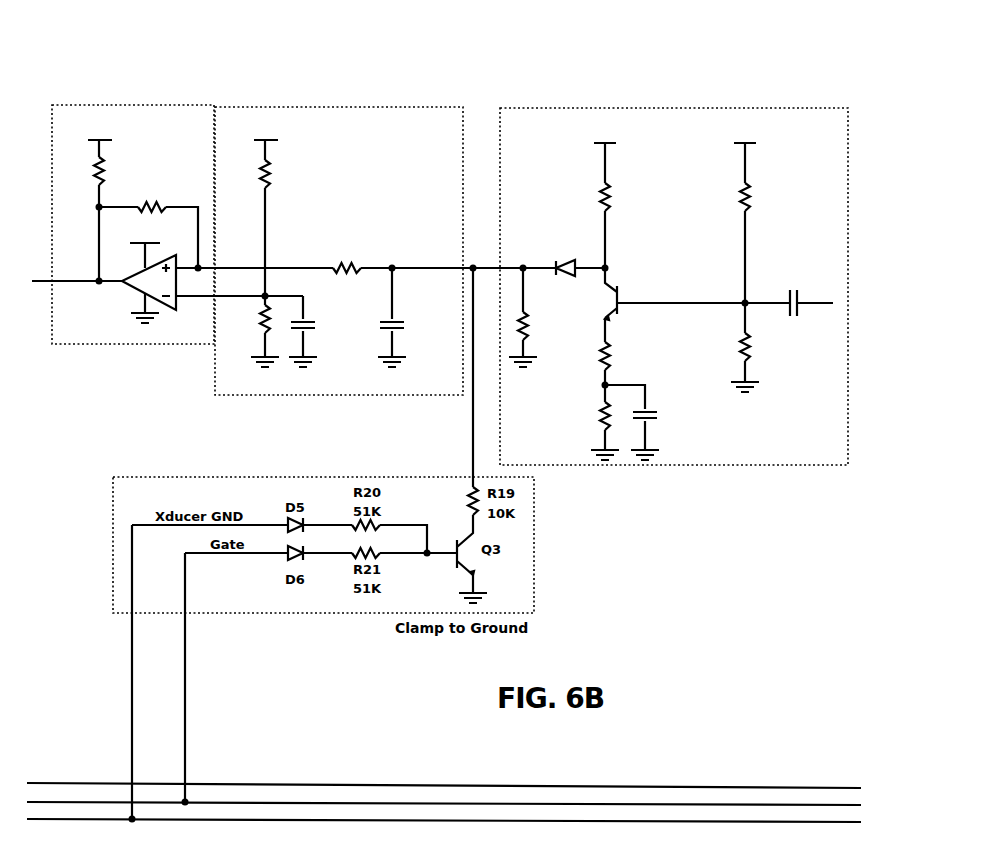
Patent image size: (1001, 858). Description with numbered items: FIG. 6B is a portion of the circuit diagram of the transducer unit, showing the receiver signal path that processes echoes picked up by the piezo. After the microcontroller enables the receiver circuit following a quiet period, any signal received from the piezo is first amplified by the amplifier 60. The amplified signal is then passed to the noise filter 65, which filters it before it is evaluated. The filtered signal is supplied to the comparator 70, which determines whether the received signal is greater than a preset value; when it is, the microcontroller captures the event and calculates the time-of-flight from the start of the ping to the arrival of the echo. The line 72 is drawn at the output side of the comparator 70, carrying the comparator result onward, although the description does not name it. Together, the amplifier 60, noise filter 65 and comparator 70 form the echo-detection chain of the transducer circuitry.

The comparator 70 is at (161, 105).
The noise filter 65 is at (388, 107).
The amplifier 60 is at (686, 108).
The input signal line 72 is at (62, 283).